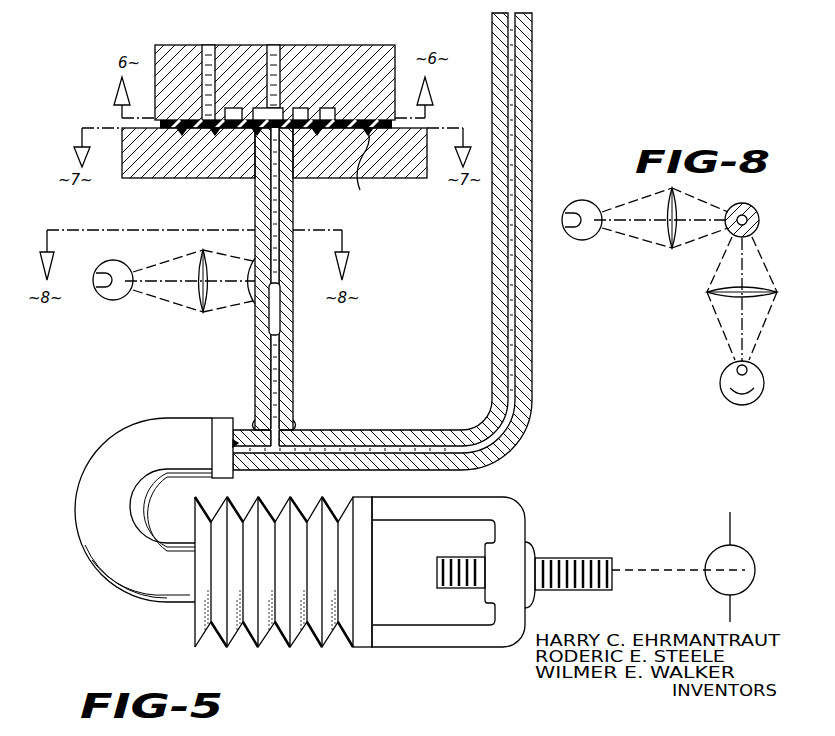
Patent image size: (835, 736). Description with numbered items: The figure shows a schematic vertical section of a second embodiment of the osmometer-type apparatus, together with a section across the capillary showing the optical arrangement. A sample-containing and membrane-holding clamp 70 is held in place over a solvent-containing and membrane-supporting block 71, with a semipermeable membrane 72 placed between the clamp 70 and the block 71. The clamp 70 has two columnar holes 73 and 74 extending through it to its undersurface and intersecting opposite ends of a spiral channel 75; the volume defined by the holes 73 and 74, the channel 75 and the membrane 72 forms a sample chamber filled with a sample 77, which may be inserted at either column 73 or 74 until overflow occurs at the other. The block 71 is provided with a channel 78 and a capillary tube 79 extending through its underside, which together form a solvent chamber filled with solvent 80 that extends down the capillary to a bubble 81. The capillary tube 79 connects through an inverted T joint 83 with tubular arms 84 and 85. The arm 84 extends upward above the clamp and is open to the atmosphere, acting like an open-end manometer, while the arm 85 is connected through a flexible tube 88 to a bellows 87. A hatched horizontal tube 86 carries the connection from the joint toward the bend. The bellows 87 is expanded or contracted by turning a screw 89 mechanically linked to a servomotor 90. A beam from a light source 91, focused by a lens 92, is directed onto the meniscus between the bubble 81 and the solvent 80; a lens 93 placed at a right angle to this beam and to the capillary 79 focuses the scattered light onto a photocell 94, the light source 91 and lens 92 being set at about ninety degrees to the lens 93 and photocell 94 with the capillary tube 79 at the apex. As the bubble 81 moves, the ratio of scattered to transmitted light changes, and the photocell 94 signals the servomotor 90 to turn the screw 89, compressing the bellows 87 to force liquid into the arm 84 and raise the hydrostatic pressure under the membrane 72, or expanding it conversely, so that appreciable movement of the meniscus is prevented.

In FIG. 5, the sample-containing and membrane-holding clamp 70 is at (158, 47).
In FIG. 5, the solvent-containing and membrane-supporting block 71 is at (412, 174).
In FIG. 5, the semipermeable membrane 72 is at (347, 120).
In FIG. 5, the columnar hole 73 is at (197, 56).
In FIG. 5, the columnar hole 74 is at (288, 62).
In FIG. 5, the spiral channel 75 is at (306, 118).
In FIG. 5, the sample 77 is at (262, 60).
In FIG. 5, the channel 78 is at (370, 168).
In FIG. 5, the capillary tube 79 is at (290, 216).
In FIG. 8, the capillary tube 79 is at (752, 208).
In FIG. 5, the solvent 80 is at (264, 200).
In FIG. 5, the bubble 81 is at (268, 312).
In FIG. 5, the inverted T joint 83 is at (295, 430).
In FIG. 5, the tubular arm 84 is at (492, 301).
In FIG. 5, the tubular arm 85 is at (217, 430).
In FIG. 5, the horizontal tube 86 is at (410, 445).
In FIG. 5, the bellows 87 is at (318, 633).
In FIG. 5, the flexible tube 88 is at (134, 428).
In FIG. 5, the screw 89 is at (575, 557).
In FIG. 5, the servomotor 90 is at (718, 553).
In FIG. 5, the light source 91 is at (115, 299).
In FIG. 8, the light source 91 is at (580, 202).
In FIG. 5, the lens 92 is at (201, 305).
In FIG. 8, the lens 92 is at (669, 246).
In FIG. 8, the lens 93 is at (720, 298).
In FIG. 8, the photocell 94 is at (722, 392).